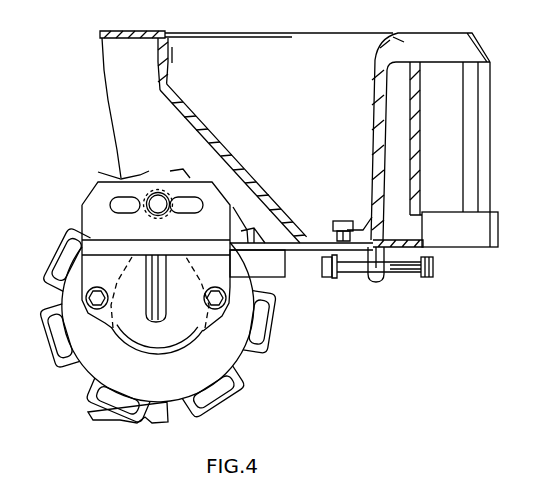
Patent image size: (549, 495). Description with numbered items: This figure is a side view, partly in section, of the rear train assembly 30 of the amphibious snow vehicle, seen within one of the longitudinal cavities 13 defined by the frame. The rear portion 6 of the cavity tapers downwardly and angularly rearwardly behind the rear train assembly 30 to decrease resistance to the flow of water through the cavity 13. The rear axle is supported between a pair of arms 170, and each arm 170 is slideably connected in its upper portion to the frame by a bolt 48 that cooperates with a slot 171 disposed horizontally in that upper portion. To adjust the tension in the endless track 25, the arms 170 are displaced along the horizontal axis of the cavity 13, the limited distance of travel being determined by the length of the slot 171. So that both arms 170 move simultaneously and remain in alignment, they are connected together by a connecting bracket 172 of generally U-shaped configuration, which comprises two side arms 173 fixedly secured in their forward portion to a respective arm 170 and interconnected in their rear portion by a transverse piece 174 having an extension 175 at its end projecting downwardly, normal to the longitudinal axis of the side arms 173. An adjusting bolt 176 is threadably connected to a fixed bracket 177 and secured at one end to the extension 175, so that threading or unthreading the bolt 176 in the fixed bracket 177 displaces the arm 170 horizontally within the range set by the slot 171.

The rear portion of the cavities 6 is at (226, 146).
The longitudinal cavity 13 is at (156, 72).
The endless track 25 is at (147, 421).
The rear train assembly 30 is at (294, 355).
The bolt 48 is at (157, 200).
The arm 170 is at (189, 333).
The slot 171 is at (186, 196).
The connecting bracket 172 is at (282, 266).
The side arm 173 is at (272, 272).
The transverse piece 174 is at (318, 245).
The extension 175 is at (331, 280).
The adjusting bolt 176 is at (356, 271).
The fixed bracket 177 is at (373, 247).